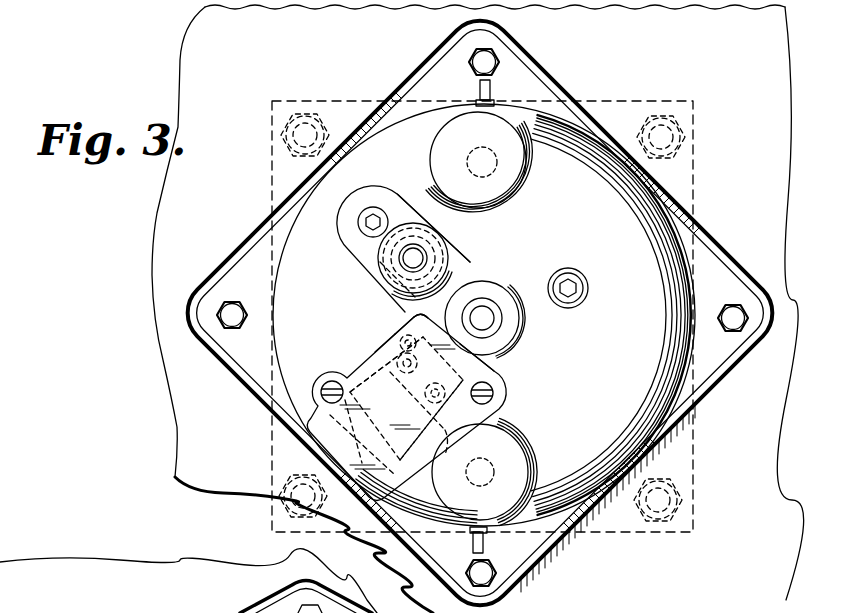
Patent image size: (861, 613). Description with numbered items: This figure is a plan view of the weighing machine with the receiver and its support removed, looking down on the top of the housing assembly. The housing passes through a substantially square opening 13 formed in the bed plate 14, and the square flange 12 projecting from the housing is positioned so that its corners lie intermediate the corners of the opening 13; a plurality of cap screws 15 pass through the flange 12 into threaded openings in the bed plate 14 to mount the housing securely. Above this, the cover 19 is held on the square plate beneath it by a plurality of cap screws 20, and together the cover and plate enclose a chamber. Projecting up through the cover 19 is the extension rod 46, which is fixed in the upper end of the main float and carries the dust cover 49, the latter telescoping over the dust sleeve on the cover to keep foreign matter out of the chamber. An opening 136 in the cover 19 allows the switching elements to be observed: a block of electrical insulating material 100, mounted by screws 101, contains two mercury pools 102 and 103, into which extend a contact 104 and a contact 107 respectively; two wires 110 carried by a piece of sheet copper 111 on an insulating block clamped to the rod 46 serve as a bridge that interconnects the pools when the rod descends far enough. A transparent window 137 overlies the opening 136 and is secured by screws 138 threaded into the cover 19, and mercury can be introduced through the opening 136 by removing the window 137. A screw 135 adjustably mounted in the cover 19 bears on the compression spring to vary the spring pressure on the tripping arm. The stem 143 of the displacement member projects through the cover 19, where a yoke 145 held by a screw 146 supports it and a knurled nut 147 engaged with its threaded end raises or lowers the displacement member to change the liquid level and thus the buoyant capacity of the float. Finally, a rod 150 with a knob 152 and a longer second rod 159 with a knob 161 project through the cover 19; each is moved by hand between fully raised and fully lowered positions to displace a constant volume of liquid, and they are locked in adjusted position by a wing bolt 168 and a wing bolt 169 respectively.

The flange 12 is at (630, 101).
The square opening 13 is at (556, 80).
The bed plate 14 is at (172, 393).
The cap screws 15 is at (281, 135).
The cover 19 is at (312, 197).
The cap screws 20 is at (476, 73).
The extension rod 46 is at (479, 313).
The dust cover 49 is at (493, 292).
The block of electrical insulating material 100 is at (414, 407).
The screws 101 is at (392, 380).
The mercury pool 102 is at (403, 327).
The mercury pool 103 is at (503, 376).
The contact 104 is at (396, 349).
The contact 107 is at (472, 442).
The wires 110 is at (482, 330).
The sheet copper 111 is at (432, 389).
The screw 135 is at (583, 281).
The opening 136 is at (406, 407).
The transparent window 137 is at (426, 314).
The screws 138 is at (333, 381).
The stem 143 is at (421, 255).
The yoke 145 is at (370, 284).
The screw 146 is at (358, 230).
The knurled nut 147 is at (412, 218).
The rod 150 is at (486, 152).
The knob 152 is at (538, 180).
The second rod 159 is at (483, 460).
The knob 161 is at (533, 460).
The wing bolt 168 is at (491, 94).
The wing bolt 169 is at (486, 547).